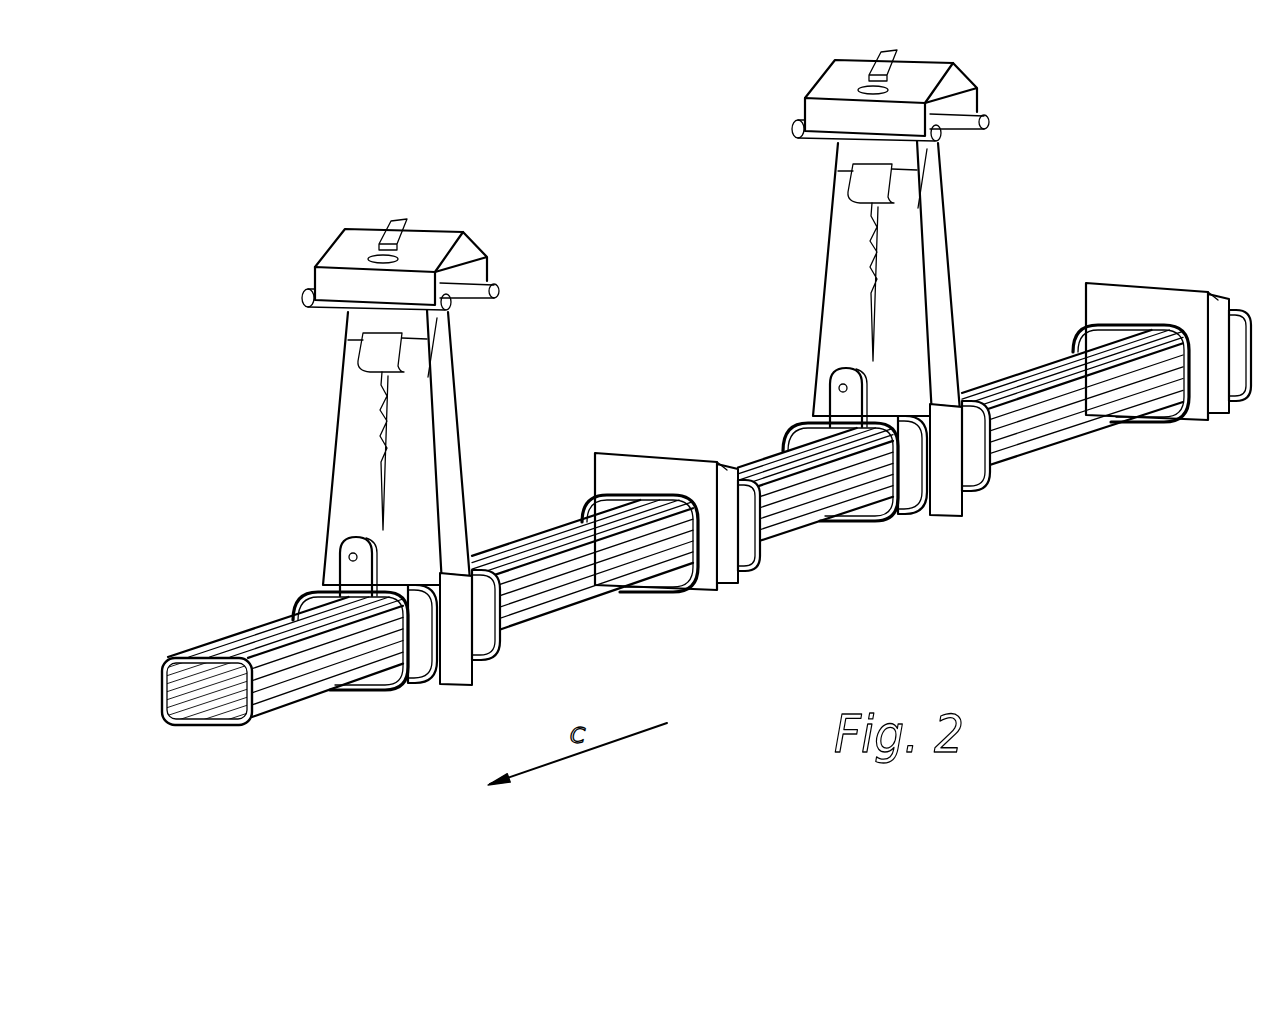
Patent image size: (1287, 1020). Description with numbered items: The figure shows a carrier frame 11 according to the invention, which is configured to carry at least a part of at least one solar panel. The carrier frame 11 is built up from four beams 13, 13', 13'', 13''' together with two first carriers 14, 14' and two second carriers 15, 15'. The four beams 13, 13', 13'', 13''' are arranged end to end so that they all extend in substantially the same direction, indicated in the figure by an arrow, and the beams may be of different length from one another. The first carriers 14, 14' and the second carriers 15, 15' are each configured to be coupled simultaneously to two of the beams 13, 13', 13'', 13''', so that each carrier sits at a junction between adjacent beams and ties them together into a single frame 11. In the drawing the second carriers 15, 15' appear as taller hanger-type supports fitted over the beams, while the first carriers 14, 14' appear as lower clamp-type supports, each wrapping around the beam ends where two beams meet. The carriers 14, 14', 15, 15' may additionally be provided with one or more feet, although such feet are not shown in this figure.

The carrier frame 11 is at (258, 148).
The beam 13 is at (1072, 413).
The beam 13' is at (825, 506).
The beam 13'' is at (582, 584).
The beam 13''' is at (290, 677).
The first carrier 14 is at (1162, 313).
The first carrier 14' is at (671, 481).
The second carrier 15 is at (868, 285).
The second carrier 15' is at (365, 454).